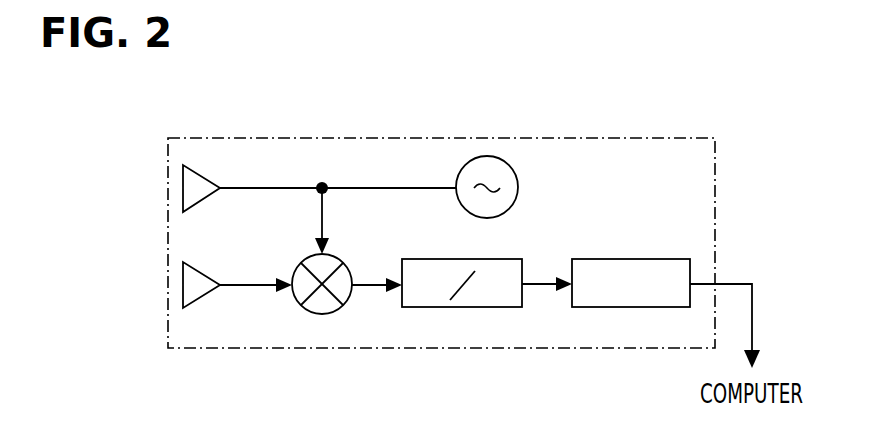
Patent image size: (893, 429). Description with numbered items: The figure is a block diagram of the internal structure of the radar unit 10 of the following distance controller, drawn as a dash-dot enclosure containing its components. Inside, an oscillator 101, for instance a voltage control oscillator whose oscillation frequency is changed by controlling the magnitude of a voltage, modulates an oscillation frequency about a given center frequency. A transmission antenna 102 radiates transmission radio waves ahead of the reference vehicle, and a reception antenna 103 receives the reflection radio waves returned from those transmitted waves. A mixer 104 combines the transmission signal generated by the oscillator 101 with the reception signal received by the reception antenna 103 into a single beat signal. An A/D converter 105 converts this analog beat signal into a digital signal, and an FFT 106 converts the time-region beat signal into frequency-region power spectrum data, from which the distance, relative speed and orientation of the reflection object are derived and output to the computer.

The radar unit 10 is at (715, 188).
The oscillator 101 is at (503, 158).
The transmission antenna 102 is at (183, 190).
The reception antenna 103 is at (183, 291).
The mixer 104 is at (325, 313).
The A/D converter 105 is at (468, 308).
The FFT 106 is at (635, 308).